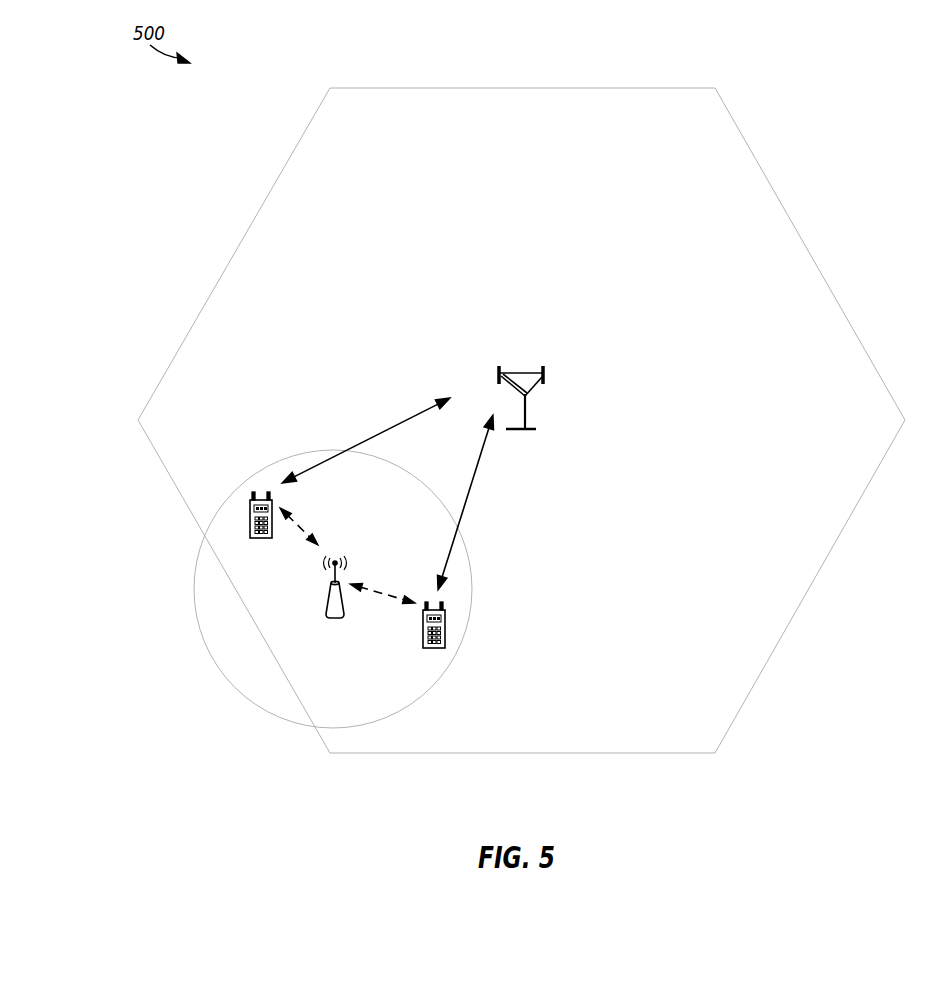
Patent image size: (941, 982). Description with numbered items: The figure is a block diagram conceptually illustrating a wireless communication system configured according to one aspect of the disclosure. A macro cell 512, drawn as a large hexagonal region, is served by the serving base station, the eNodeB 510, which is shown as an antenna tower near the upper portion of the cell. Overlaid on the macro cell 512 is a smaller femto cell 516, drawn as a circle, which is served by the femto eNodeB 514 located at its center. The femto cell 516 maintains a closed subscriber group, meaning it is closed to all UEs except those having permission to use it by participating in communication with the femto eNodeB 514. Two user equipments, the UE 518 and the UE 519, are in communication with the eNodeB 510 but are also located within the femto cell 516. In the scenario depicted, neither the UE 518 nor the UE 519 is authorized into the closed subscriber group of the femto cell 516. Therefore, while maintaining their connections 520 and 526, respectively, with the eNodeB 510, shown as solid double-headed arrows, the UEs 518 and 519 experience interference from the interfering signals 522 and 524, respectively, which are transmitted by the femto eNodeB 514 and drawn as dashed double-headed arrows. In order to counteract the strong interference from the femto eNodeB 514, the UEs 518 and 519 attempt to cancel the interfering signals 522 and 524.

The eNodeB 510 is at (529, 437).
The macro cell 512 is at (815, 582).
The femto eNodeB 514 is at (331, 618).
The femto cell 516 is at (443, 677).
The UE 518 is at (262, 539).
The UE 519 is at (422, 647).
The connection 520 is at (472, 490).
The interfering signal 522 is at (383, 591).
The interfering signal 524 is at (308, 528).
The connection 526 is at (375, 423).